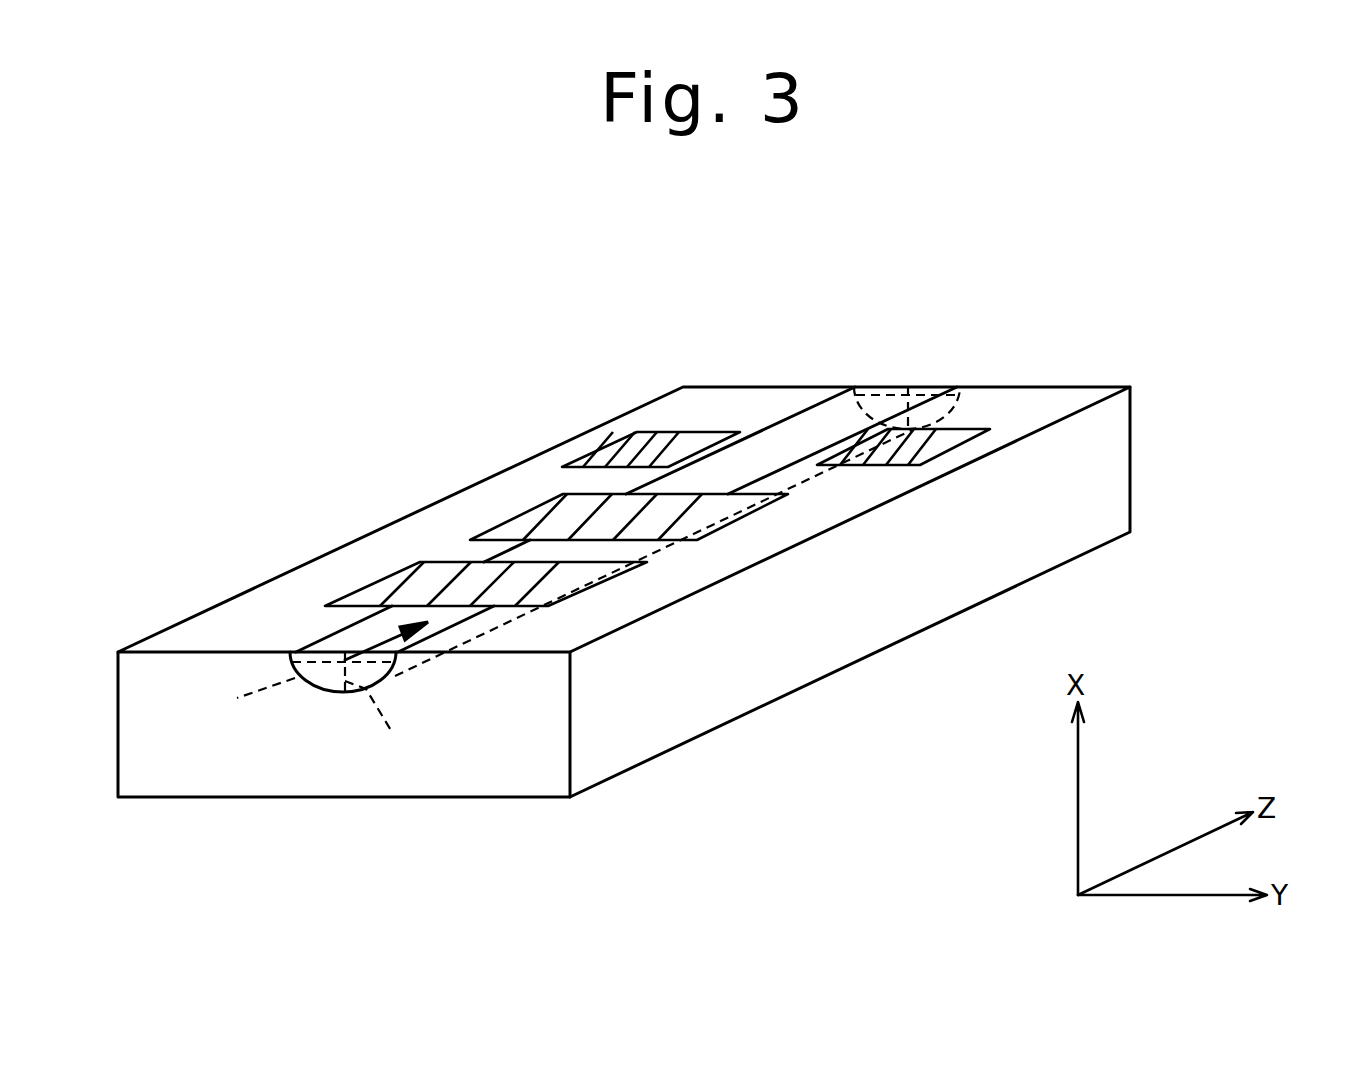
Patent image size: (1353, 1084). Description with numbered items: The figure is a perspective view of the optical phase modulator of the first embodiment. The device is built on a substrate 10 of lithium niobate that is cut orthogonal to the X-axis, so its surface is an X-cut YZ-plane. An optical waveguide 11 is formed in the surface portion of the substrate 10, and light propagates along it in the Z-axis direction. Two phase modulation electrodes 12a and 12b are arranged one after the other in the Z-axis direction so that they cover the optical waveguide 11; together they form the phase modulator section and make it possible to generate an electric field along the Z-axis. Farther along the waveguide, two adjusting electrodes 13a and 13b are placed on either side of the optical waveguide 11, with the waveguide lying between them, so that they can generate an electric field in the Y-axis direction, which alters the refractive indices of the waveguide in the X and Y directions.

The substrate 10 is at (843, 645).
The optical waveguide 11 is at (327, 680).
The phase modulation electrode 12a is at (410, 580).
The phase modulation electrode 12b is at (555, 518).
The adjusting electrode 13a is at (683, 443).
The adjusting electrode 13b is at (955, 437).